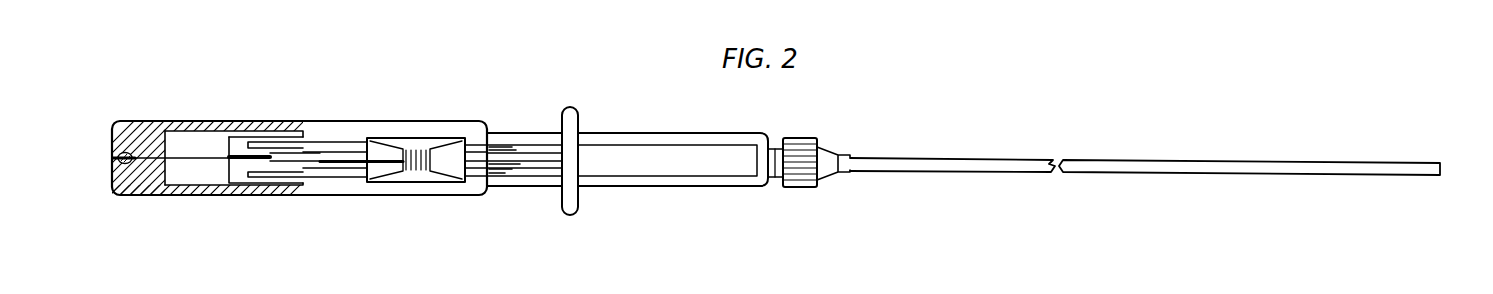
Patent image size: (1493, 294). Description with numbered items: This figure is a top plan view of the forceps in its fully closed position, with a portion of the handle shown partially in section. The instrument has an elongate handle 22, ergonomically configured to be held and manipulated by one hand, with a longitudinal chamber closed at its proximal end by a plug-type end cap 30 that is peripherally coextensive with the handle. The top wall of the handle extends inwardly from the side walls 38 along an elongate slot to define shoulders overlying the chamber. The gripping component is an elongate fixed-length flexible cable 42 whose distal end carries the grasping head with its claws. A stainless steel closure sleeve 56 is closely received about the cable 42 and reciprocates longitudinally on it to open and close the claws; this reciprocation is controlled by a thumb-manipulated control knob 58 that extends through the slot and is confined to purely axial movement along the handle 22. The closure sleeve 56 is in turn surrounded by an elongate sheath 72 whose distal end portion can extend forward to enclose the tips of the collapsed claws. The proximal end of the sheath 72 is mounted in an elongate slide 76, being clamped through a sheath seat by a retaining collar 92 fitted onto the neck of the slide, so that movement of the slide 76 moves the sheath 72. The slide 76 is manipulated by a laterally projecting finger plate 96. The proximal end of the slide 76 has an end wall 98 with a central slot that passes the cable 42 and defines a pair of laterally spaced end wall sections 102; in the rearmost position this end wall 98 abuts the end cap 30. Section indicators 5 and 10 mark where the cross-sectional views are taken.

The section line 5- 5 is at (87, 177).
The section line 10- 10 is at (1348, 168).
The handle 22 is at (408, 200).
The end cap 30 is at (118, 198).
The side walls 38 is at (262, 196).
The cable 42 is at (216, 153).
The closure sleeve 56 is at (511, 155).
The control knob 58 is at (384, 136).
The sheath 72 is at (1147, 158).
The slide 76 is at (600, 128).
The retaining collar 92 is at (797, 187).
The finger plate 96 is at (572, 200).
The end wall 98 is at (223, 172).
The end wall sections 102 is at (240, 137).